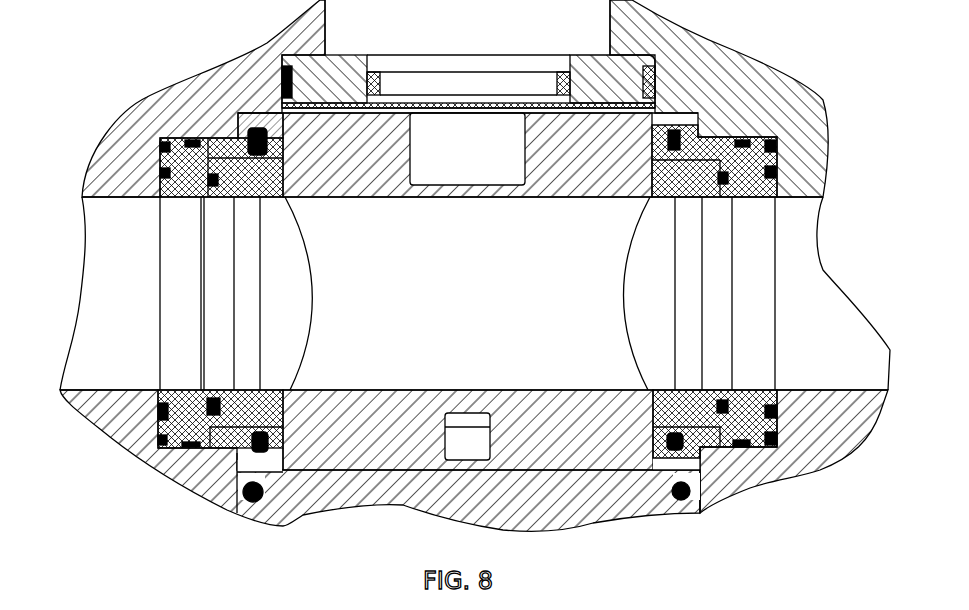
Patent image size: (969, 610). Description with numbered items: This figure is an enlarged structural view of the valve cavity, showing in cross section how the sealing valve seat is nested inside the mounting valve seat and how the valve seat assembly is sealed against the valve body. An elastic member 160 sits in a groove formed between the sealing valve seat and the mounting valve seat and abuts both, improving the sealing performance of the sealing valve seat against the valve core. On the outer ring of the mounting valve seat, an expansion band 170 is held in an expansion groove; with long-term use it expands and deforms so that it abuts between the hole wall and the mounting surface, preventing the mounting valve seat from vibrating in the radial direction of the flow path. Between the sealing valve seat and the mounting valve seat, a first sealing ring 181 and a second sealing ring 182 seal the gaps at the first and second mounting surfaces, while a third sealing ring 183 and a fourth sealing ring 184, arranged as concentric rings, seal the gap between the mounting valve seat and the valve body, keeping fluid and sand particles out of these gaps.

The elastic member 160 is at (257, 128).
The expansion band 170 is at (190, 140).
The first sealing ring 181 is at (185, 197).
The second sealing ring 182 is at (285, 197).
The third sealing ring 183 is at (160, 172).
The fourth sealing ring 184 is at (162, 146).